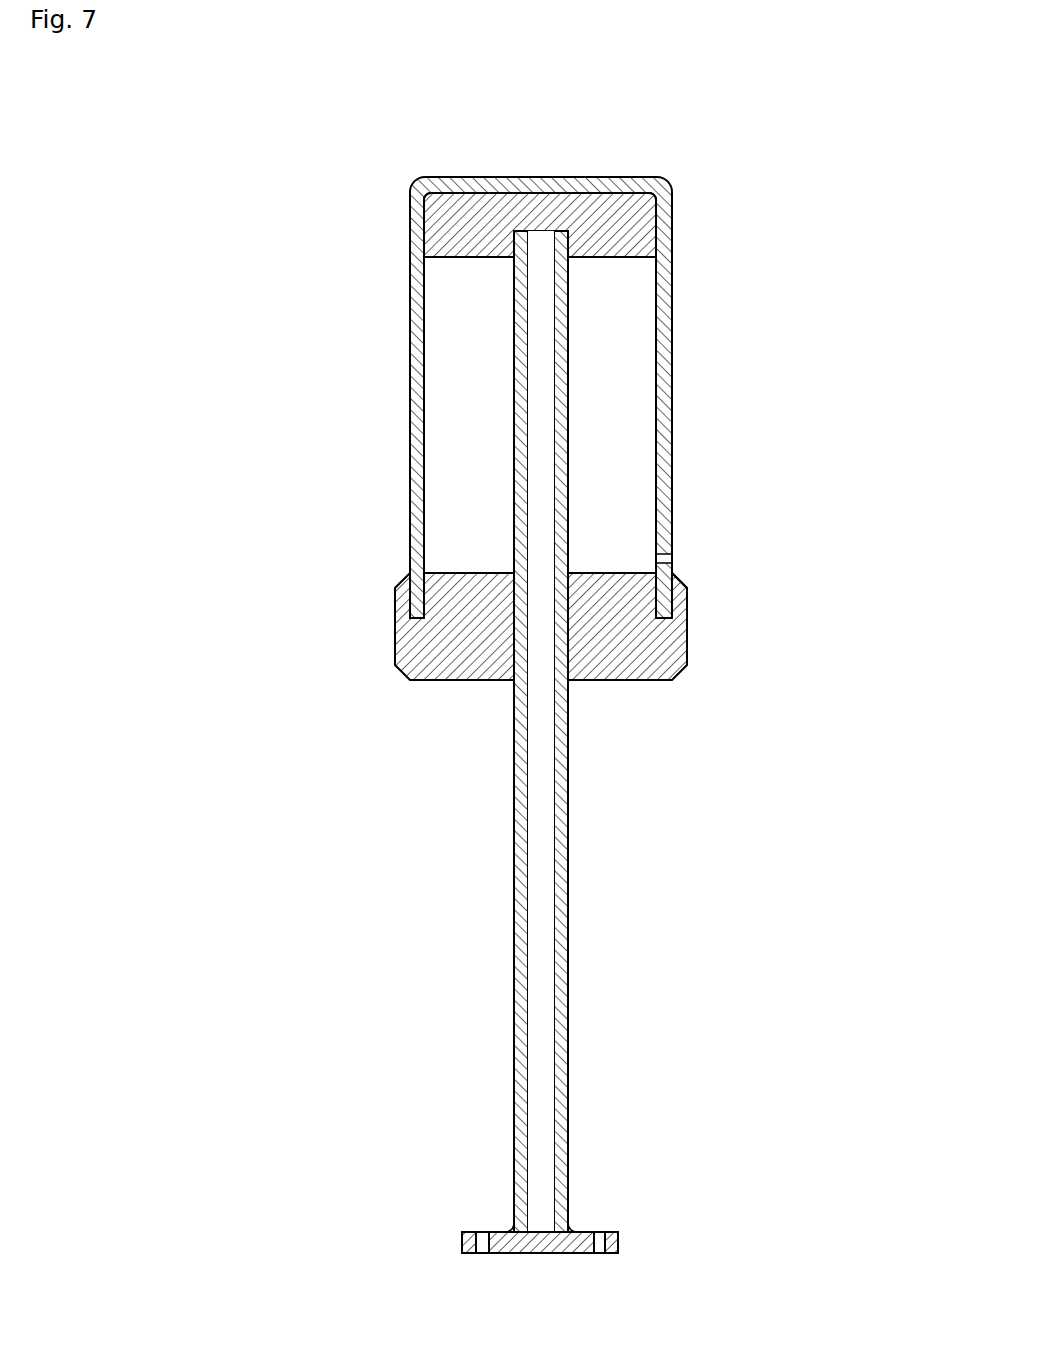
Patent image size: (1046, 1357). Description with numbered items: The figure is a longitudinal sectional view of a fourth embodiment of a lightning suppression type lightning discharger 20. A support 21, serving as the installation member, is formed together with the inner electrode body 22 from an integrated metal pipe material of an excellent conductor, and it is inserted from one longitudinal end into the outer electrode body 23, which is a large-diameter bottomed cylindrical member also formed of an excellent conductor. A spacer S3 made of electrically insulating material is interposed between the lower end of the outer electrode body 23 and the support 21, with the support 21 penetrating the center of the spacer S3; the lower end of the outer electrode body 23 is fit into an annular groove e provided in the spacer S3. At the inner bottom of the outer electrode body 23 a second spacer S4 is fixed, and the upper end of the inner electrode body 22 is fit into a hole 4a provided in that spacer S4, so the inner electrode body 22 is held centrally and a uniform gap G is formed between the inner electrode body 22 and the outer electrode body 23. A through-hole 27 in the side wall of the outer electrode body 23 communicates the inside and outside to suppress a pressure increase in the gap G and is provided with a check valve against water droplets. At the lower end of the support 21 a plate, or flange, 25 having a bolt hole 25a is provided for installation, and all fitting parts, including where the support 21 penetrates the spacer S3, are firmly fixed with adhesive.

The lightning discharger 20 is at (293, 278).
The support 21 is at (514, 818).
The inner electrode body 22 is at (514, 435).
The outer electrode body 23 is at (672, 492).
The plate (flange) 25 is at (618, 1235).
The bolt hole 25a is at (600, 1232).
The through-hole 27 is at (672, 560).
The hole 4a is at (568, 283).
The annular groove e is at (686, 600).
The gap G is at (630, 393).
The spacer S3 is at (395, 638).
The spacer S4 is at (672, 223).